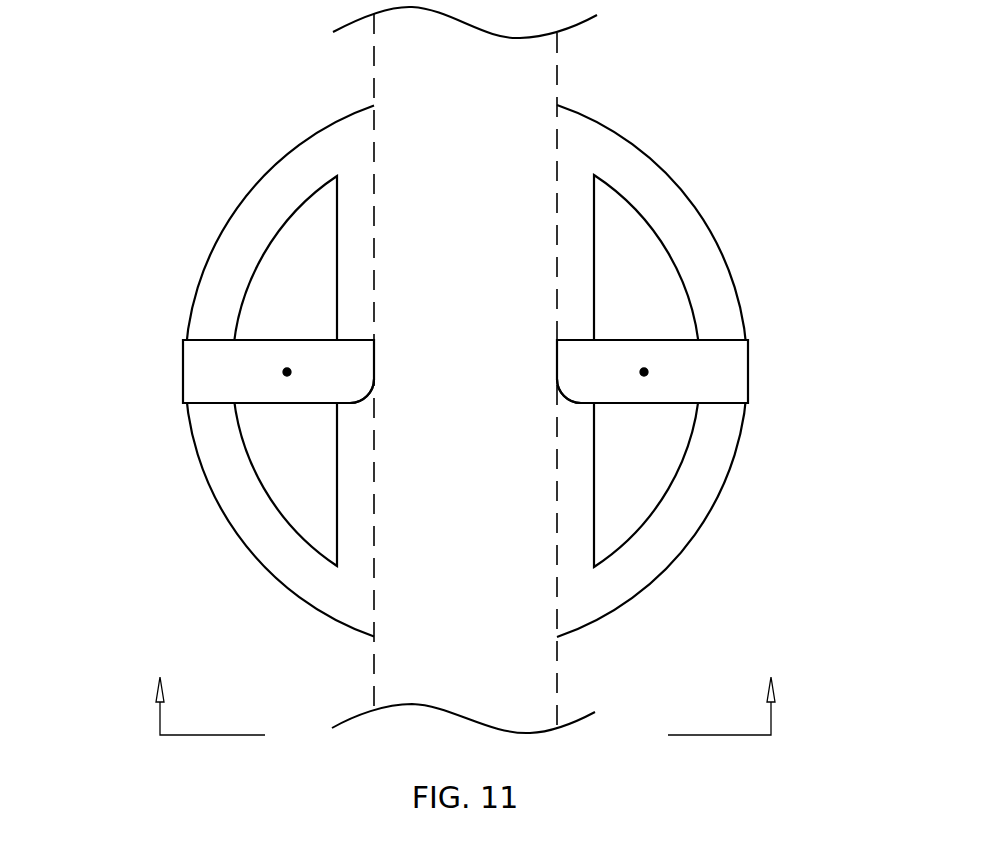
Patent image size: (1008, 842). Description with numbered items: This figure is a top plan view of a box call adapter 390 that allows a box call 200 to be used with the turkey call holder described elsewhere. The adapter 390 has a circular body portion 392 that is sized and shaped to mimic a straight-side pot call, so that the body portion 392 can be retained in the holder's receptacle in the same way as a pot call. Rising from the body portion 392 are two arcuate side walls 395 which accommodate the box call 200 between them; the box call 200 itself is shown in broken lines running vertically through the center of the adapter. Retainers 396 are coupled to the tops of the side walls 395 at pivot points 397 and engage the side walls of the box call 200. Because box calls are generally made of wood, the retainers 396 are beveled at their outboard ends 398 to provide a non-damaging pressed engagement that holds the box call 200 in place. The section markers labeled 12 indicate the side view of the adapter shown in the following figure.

The box call 200 is at (557, 71).
The box call adapter 390 is at (476, 329).
The body portion 392 is at (678, 561).
The side walls 395 is at (301, 233).
The retainers 396 is at (198, 372).
The pivot points 397 is at (287, 372).
The outboard ends 398 is at (368, 397).
The section line 12- 12 is at (465, 691).